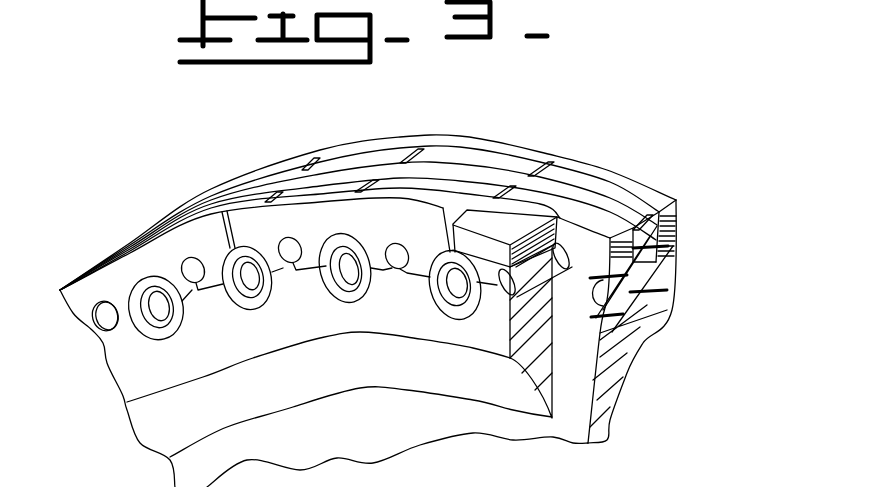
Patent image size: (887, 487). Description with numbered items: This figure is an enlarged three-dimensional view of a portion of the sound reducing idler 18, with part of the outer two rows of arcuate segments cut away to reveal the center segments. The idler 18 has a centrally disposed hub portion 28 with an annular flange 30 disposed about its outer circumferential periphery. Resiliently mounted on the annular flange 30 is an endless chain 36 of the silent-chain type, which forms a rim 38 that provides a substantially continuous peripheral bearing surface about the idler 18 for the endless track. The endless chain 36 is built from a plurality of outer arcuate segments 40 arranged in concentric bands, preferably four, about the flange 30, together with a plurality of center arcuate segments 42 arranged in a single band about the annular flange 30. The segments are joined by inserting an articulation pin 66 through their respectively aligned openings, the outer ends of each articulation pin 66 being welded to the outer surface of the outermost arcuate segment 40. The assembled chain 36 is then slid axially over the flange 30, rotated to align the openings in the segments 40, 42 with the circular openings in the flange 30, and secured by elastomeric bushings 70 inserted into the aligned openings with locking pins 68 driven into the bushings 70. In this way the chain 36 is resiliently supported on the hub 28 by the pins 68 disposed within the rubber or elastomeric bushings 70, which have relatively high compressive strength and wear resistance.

The sound reducing idler 18 is at (676, 181).
The hub portion 28 is at (408, 368).
The annular flange 30 is at (628, 343).
The endless chain 36 is at (514, 139).
The rim 38 is at (460, 137).
The outer arcuate segments 40 is at (317, 200).
The center arcuate segments 42 is at (463, 180).
The articulation pin 66 is at (190, 259).
The locking pins 68 is at (243, 312).
The elastomeric bushings 70 is at (352, 297).